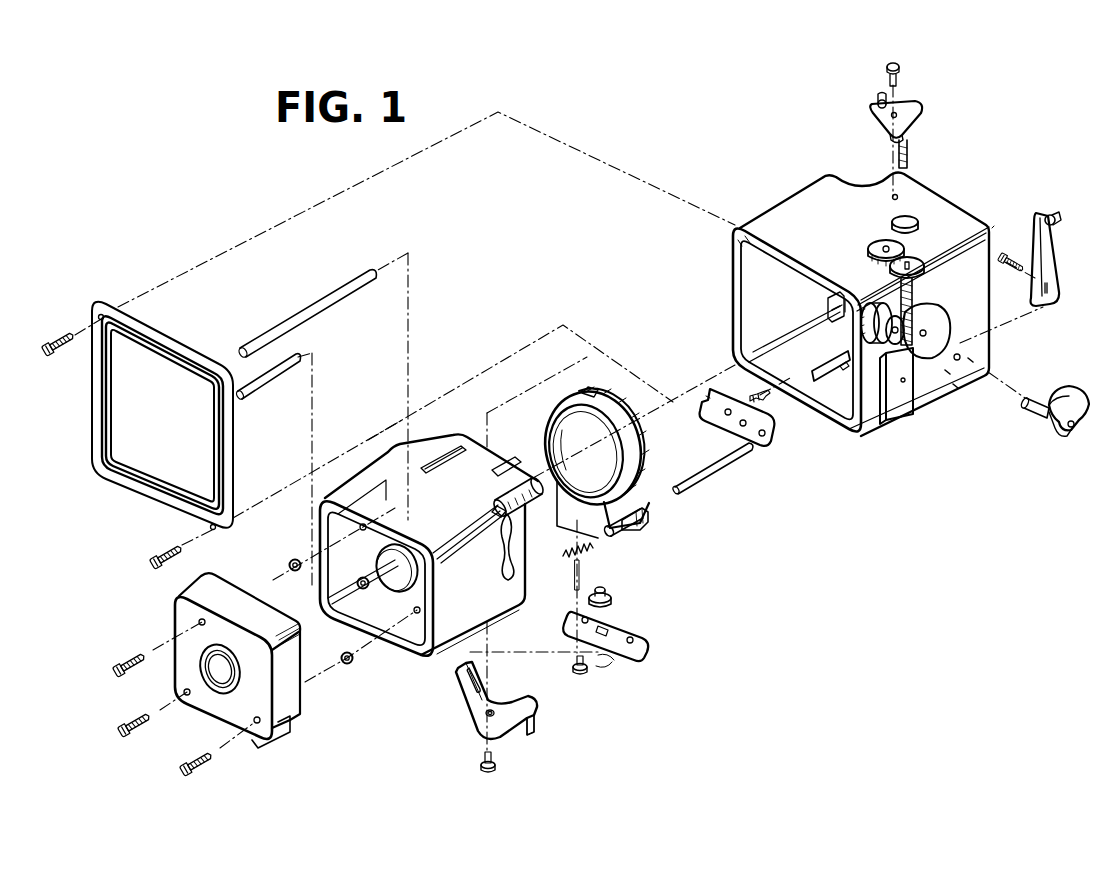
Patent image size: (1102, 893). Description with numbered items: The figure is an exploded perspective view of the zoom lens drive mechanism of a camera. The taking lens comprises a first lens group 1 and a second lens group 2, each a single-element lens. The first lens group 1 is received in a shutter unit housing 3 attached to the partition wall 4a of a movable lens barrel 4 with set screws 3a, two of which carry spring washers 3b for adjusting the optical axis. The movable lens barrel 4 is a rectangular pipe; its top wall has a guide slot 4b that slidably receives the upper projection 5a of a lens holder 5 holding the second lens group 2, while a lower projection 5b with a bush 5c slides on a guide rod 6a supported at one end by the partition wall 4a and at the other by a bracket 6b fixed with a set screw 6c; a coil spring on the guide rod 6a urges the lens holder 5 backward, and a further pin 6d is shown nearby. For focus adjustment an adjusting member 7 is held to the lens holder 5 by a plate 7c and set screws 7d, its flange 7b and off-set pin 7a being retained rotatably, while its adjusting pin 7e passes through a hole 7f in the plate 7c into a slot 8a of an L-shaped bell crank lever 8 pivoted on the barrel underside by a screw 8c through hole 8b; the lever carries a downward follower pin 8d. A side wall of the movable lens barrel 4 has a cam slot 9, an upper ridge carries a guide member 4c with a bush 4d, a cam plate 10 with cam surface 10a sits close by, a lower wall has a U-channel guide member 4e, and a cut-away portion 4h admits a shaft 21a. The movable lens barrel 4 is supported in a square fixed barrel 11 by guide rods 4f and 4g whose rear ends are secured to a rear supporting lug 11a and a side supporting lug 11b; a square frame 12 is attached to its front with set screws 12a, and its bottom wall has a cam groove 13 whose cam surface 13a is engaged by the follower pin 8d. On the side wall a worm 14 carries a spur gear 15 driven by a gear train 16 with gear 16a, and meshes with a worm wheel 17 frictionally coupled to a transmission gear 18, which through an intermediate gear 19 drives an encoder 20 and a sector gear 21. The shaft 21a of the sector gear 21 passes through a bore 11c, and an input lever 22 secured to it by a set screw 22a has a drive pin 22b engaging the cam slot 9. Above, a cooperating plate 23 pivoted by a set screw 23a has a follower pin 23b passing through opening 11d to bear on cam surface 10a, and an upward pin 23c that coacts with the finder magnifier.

The first lens group 1 is at (204, 672).
The second lens group 2 is at (608, 456).
The shutter unit housing 3 is at (170, 600).
The set screws 3a is at (123, 656).
The spring washers 3b is at (291, 559).
The movable lens barrel 4 is at (366, 472).
The partition wall 4a is at (412, 616).
The guide slot 4b is at (442, 460).
The guide member 4c is at (503, 520).
The bush 4d is at (482, 507).
The guide member 4e is at (396, 544).
The guide rod 4f is at (300, 318).
The guide rod 4g is at (272, 388).
The cut-away portion 4h is at (566, 576).
The lens holder 5 is at (553, 416).
The upper projection 5a is at (590, 386).
The lower projection 5b is at (650, 516).
The bush 5c is at (618, 532).
The guide rod 6a is at (718, 470).
The bracket 6b is at (776, 440).
The set screw 6c is at (750, 394).
The pin 6d is at (576, 578).
The adjusting member 7 is at (640, 593).
The off-set pin 7a is at (606, 590).
The flange 7b is at (612, 602).
The plate 7c is at (636, 652).
The set screws 7d is at (588, 672).
The adjusting pin 7e is at (614, 626).
The hole 7f is at (606, 660).
The bell crank lever 8 is at (470, 713).
The slot 8a is at (462, 678).
The hole 8b is at (502, 734).
The screw 8c is at (478, 763).
The follower pin 8d is at (538, 725).
The cam slot 9 is at (500, 562).
The cam plate 10 is at (496, 486).
The cam surface 10a is at (506, 466).
The fixed barrel 11 is at (787, 202).
The rear supporting lug 11a is at (990, 223).
The side supporting lug 11b is at (830, 304).
The bore 11c is at (952, 380).
The opening 11d is at (910, 214).
The square frame 12 is at (100, 398).
The set screws 12a is at (53, 338).
The cam groove 13 is at (826, 368).
The cam surface 13a is at (843, 372).
The worm 14 is at (916, 296).
The spur gear 15 is at (890, 271).
The gear train 16 is at (858, 240).
The gear 16a is at (880, 246).
The worm wheel 17 is at (890, 338).
The transmission gear 18 is at (866, 325).
The intermediate gear 19 is at (935, 325).
The encoder 20 is at (904, 400).
The sector gear 21 is at (1066, 392).
The shaft 21a is at (1036, 418).
The input lever 22 is at (1056, 264).
The set screw 22a is at (1006, 252).
The drive pin 22b is at (1056, 214).
The cooperating plate 23 is at (916, 112).
The set screw 23a is at (900, 68).
The follower pin 23b is at (910, 153).
The pin 23c is at (878, 98).